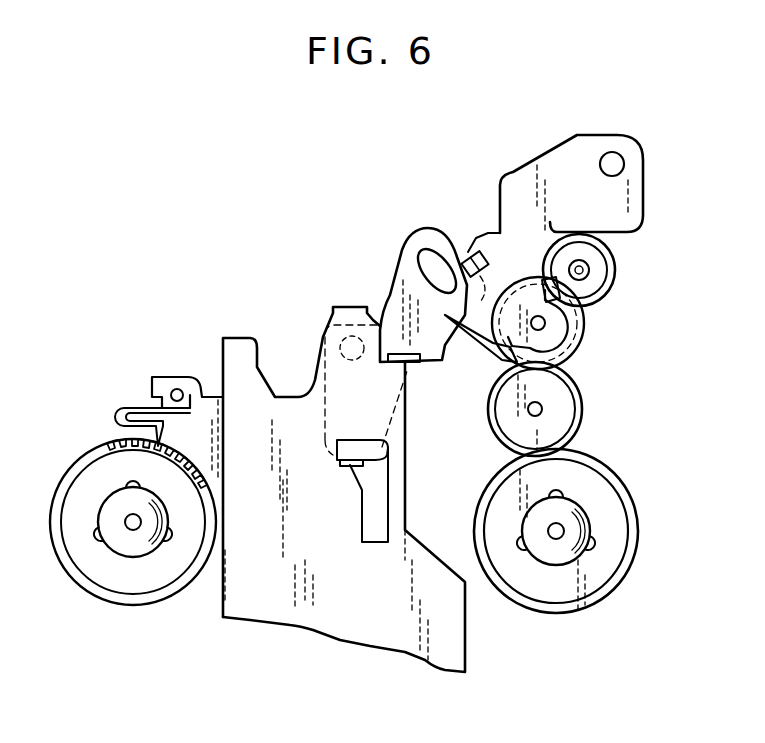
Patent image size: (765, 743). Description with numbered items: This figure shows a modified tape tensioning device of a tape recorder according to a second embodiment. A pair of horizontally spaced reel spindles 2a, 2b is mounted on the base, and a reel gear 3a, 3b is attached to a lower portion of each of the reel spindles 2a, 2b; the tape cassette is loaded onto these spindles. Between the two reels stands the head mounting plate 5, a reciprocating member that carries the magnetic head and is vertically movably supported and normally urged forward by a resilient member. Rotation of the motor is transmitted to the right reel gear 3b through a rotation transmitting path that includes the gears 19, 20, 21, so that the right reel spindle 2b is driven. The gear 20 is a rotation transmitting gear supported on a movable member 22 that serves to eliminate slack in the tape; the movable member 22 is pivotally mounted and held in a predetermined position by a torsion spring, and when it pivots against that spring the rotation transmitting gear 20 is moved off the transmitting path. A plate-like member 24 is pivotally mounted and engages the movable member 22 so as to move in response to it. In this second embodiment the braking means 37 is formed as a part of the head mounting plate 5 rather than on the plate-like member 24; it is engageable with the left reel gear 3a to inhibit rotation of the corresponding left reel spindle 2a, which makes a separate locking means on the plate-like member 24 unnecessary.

The head mounting plate 5 is at (313, 632).
The braking means 37 is at (118, 407).
The reel gear 3a is at (130, 603).
The reel spindle 2a is at (108, 546).
The plate-like member 24 is at (384, 265).
The movable member 22 is at (640, 212).
The gear 19 is at (615, 266).
The rotation transmitting gear 20 is at (586, 322).
The gear 21 is at (583, 390).
The reel gear 3b is at (632, 487).
The reel spindle 2b is at (552, 566).